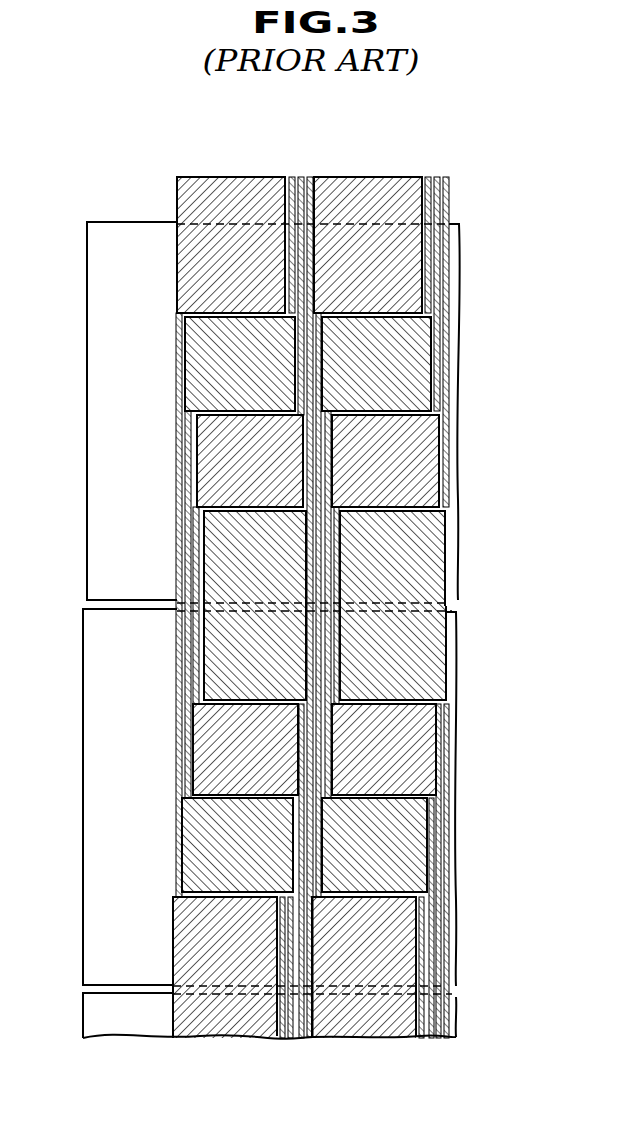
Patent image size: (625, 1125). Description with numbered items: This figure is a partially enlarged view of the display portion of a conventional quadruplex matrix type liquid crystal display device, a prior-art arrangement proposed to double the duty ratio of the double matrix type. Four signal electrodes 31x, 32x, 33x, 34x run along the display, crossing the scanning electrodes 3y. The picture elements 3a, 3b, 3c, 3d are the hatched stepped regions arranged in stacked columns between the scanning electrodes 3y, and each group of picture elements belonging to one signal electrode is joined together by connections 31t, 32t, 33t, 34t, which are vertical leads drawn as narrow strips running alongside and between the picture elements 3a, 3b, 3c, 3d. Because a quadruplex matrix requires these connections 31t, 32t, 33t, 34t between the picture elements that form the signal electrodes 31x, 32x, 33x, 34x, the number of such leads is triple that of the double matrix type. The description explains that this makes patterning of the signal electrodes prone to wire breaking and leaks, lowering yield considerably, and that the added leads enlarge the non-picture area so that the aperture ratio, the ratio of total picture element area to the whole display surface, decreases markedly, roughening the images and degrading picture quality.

The picture element 3a is at (177, 271).
The picture element 3b is at (184, 368).
The picture element 3c is at (188, 462).
The picture element 3d is at (190, 530).
The scanning electrodes 3y is at (87, 552).
The signal electrode 31x is at (198, 178).
The signal electrode 32x is at (292, 178).
The signal electrode 33x is at (302, 178).
The signal electrode 34x is at (310, 178).
The connection 31t is at (182, 587).
The connection 32t is at (183, 642).
The connection 33t is at (191, 684).
The connection 34t is at (440, 958).